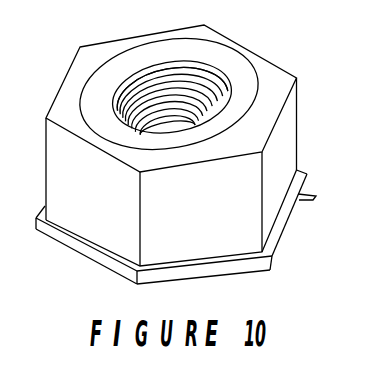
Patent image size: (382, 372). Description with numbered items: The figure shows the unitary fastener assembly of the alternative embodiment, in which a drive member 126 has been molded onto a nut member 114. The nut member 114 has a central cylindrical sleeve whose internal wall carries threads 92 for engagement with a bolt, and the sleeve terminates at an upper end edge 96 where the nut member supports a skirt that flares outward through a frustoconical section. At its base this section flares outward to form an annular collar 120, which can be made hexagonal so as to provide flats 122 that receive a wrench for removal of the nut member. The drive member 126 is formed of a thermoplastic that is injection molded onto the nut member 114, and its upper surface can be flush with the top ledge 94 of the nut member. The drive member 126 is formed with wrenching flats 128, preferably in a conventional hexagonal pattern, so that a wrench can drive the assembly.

The threads 92 is at (170, 67).
The top ledge 94 is at (107, 67).
The upper end edge 96 is at (113, 88).
The nut member 114 is at (314, 197).
The annular collar 120 is at (262, 272).
The flats 122 is at (98, 259).
The drive member 126 is at (263, 58).
The wrenching flats 128 is at (195, 145).